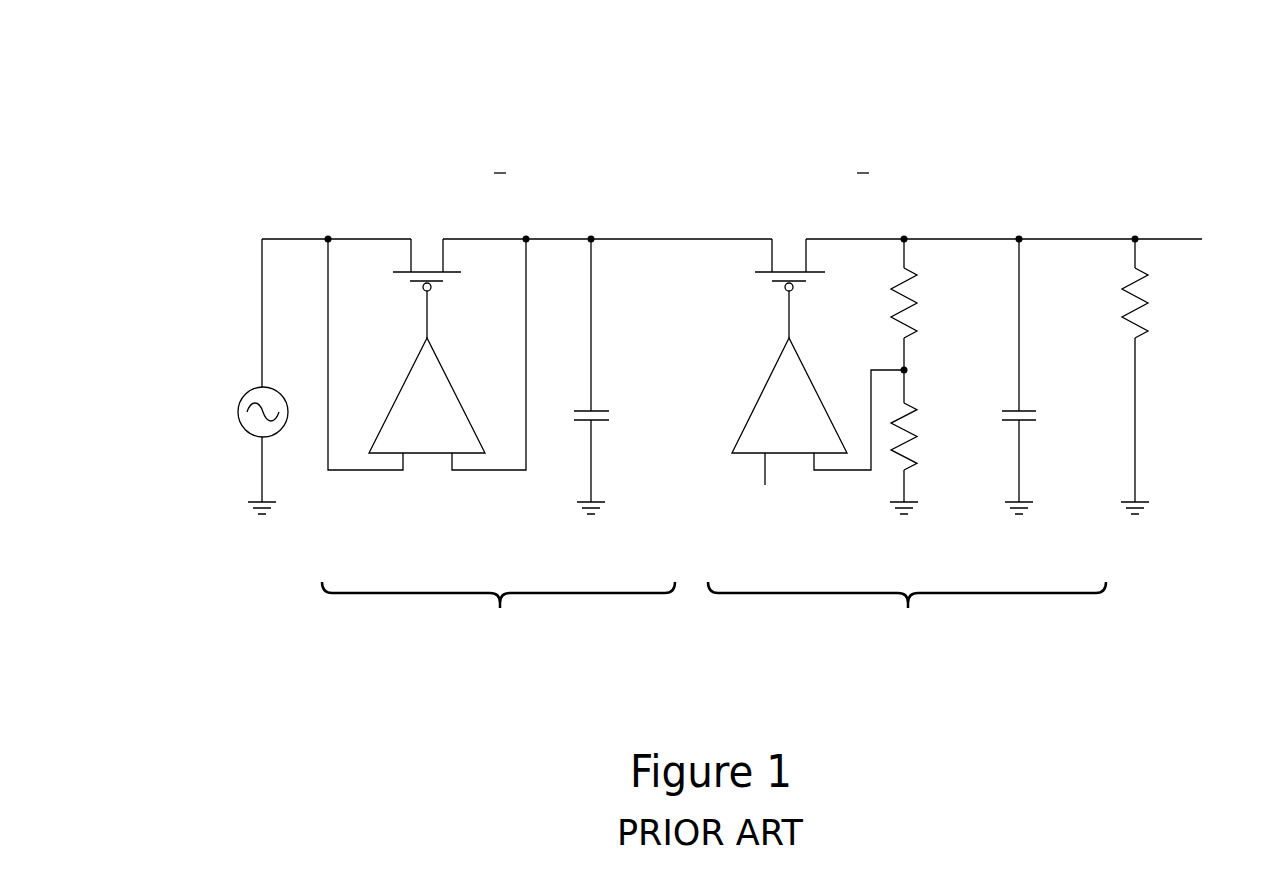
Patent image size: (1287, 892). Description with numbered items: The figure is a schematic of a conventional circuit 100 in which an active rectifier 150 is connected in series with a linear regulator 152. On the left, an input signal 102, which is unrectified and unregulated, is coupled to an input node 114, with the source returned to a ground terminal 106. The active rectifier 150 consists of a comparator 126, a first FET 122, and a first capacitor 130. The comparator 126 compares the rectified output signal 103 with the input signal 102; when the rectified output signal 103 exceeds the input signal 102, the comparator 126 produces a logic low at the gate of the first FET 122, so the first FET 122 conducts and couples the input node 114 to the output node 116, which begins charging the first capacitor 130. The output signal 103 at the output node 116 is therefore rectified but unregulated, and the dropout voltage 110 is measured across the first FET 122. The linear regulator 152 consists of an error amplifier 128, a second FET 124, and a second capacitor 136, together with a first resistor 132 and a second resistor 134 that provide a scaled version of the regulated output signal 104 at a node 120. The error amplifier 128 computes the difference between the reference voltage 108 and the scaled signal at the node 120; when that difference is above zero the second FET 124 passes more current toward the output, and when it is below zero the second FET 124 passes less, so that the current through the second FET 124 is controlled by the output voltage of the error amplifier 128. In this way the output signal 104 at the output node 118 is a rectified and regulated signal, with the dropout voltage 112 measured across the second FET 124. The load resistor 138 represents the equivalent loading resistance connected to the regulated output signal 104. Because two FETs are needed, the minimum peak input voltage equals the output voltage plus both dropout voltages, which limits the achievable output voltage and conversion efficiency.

The circuit 100 is at (703, 108).
The input signal Vac 102 is at (196, 410).
The output signal Vudc 103 is at (640, 275).
The output signal Vo 104 is at (1216, 229).
The ground terminal 106 is at (242, 503).
The reference voltage Vref 108 is at (744, 510).
The dropout voltage Vd 110 is at (452, 178).
The dropout voltage Vdo 112 is at (815, 178).
The input node 114 is at (328, 237).
The output node 116 is at (591, 237).
The output node 118 is at (1019, 237).
The node 120 is at (908, 368).
The first FET M1 122 is at (448, 222).
The second FET M2 124 is at (810, 222).
The comparator CO1 126 is at (450, 395).
The error amplifier Ae 128 is at (773, 396).
The first capacitor Cb1 130 is at (633, 428).
The resistor R1 132 is at (954, 302).
The resistor R2 134 is at (955, 428).
The capacitor Cb2 136 is at (1078, 400).
The resistor RL 138 is at (1088, 306).
The active rectifier 150 is at (498, 612).
The linear regulator 152 is at (907, 609).